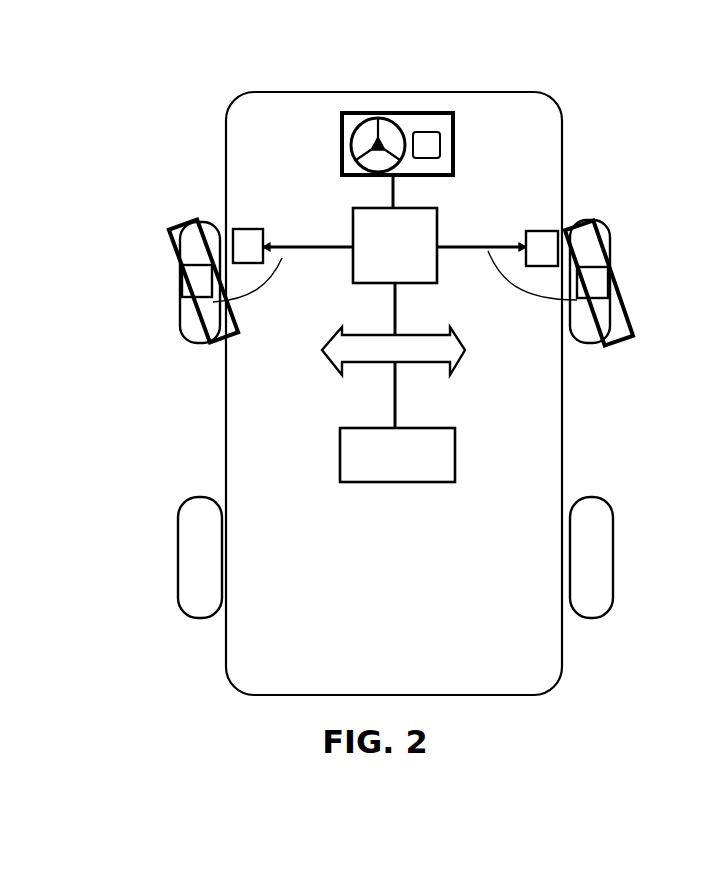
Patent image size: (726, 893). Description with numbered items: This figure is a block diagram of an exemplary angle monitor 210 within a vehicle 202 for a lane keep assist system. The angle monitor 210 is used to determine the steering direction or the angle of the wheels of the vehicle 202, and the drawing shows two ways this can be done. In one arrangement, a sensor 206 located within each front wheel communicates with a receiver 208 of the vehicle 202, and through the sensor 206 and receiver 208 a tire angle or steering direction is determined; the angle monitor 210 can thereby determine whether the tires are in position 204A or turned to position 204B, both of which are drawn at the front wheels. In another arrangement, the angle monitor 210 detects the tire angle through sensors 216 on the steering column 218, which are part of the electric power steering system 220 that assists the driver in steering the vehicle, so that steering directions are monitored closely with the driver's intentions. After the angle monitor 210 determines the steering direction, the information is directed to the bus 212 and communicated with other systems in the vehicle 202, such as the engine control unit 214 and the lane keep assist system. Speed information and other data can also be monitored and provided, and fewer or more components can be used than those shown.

The vehicle 202 is at (470, 92).
The tire position 204A is at (220, 221).
The tire position 204B is at (167, 230).
The sensor 206 is at (182, 288).
The receiver 208 is at (262, 231).
The angle monitor 210 is at (437, 223).
The bus 212 is at (467, 342).
The engine control unit 214 is at (455, 433).
The sensor 216 is at (445, 152).
The steering column 218 is at (340, 146).
The electric power steering system 220 is at (376, 113).